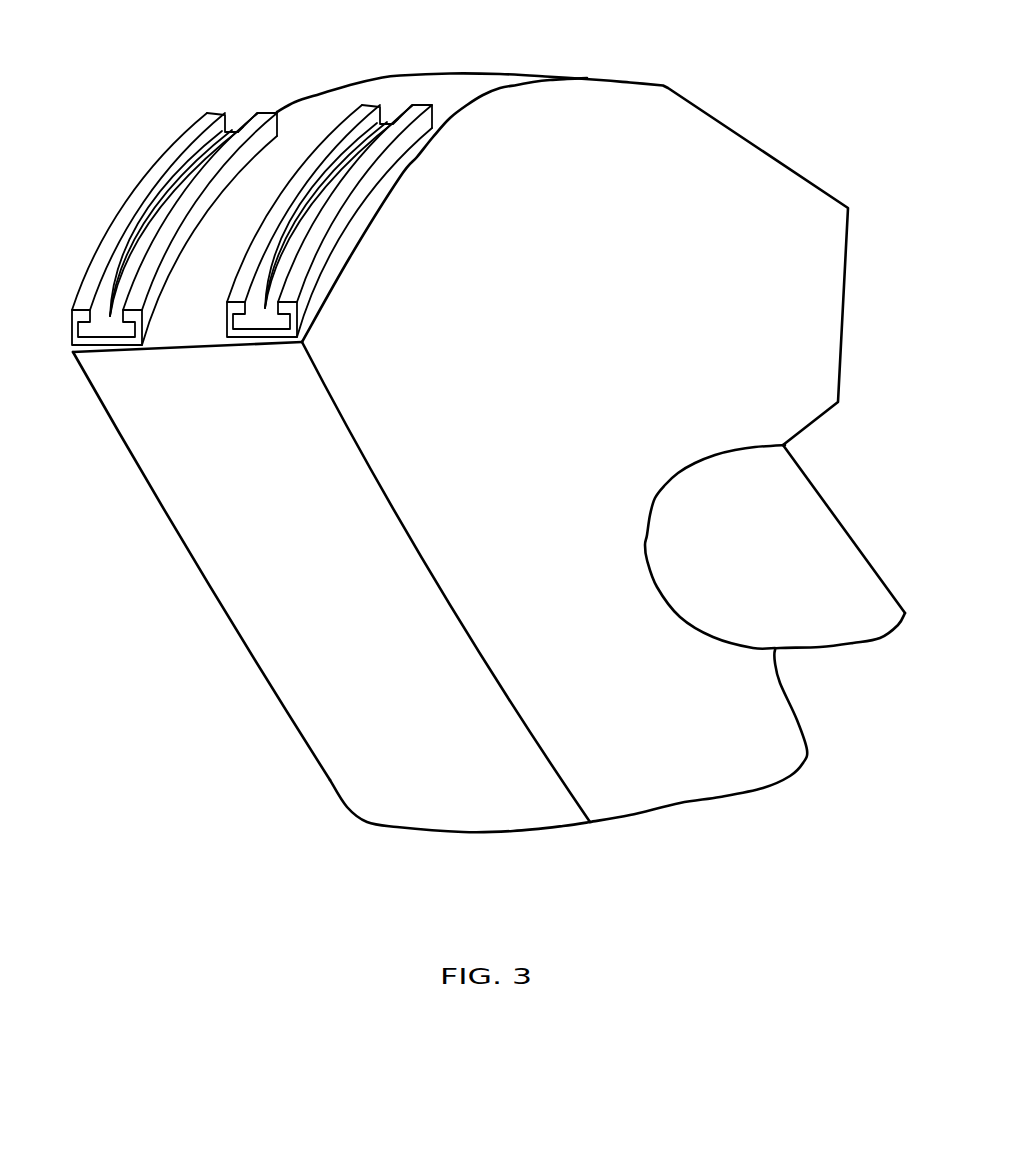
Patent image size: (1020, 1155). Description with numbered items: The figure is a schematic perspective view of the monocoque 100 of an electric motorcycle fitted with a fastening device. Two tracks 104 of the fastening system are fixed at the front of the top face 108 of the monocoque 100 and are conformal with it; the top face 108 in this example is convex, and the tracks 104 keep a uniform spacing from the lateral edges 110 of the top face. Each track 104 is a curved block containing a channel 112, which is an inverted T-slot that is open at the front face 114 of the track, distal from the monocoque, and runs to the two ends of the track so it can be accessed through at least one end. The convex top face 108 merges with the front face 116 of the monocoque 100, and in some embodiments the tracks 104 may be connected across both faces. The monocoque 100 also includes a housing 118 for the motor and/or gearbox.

The monocoque 100 is at (480, 73).
The tracks 104 is at (151, 272).
The top face 108 is at (216, 320).
The lateral edges 110 is at (357, 242).
The channel 112 is at (95, 337).
The front face 114 is at (103, 263).
The front face 116 is at (279, 480).
The housing 118 is at (860, 643).